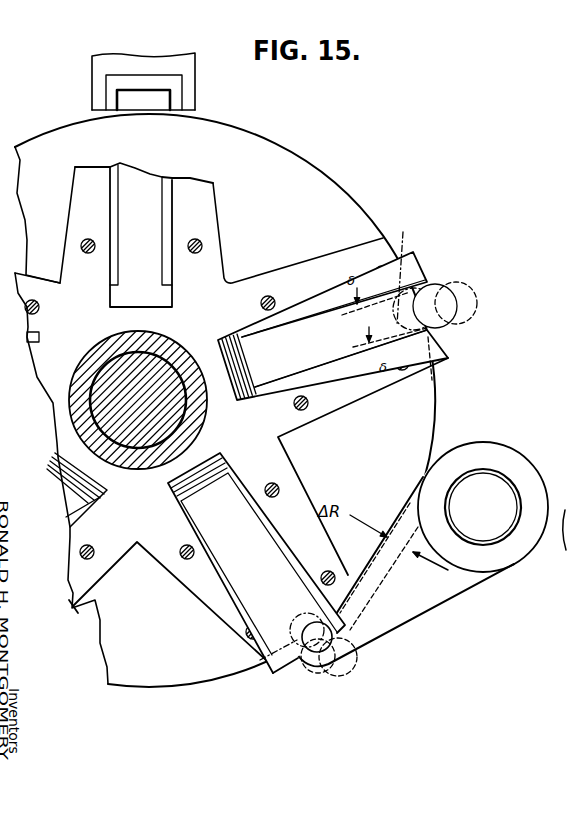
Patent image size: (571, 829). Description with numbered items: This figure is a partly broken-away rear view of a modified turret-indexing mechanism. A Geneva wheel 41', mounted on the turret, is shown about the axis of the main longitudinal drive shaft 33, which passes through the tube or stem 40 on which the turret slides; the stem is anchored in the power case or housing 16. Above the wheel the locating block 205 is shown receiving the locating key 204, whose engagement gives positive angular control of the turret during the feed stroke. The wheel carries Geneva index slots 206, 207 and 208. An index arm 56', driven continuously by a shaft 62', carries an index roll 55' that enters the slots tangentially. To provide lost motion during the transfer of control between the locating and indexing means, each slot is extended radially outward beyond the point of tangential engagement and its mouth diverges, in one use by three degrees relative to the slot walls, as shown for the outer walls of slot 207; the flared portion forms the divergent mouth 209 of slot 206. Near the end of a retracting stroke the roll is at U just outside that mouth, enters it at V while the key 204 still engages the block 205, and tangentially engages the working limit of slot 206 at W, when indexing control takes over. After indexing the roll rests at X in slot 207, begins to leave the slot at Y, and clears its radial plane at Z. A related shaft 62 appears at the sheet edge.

The power case 16 is at (92, 81).
The locating block 205 is at (116, 81).
The locating key 204 is at (147, 104).
The disc 41' is at (231, 400).
The indexing slot 208 is at (158, 237).
The main longitudinal drive shaft 33 is at (148, 362).
The tube or stem 40 is at (174, 352).
The index slot 207 is at (272, 375).
The index slot 206 is at (241, 572).
The divergent mouth 209 is at (360, 592).
The index roll 55' is at (343, 635).
The index arm 56' is at (419, 555).
The shaft 62' is at (490, 503).
The ring 62 is at (562, 545).
The index roll position X is at (414, 287).
The index roll position Y is at (440, 286).
The index roll position Z is at (466, 290).
The index roll position W is at (296, 616).
The index roll position V is at (310, 672).
The index roll position U is at (339, 676).